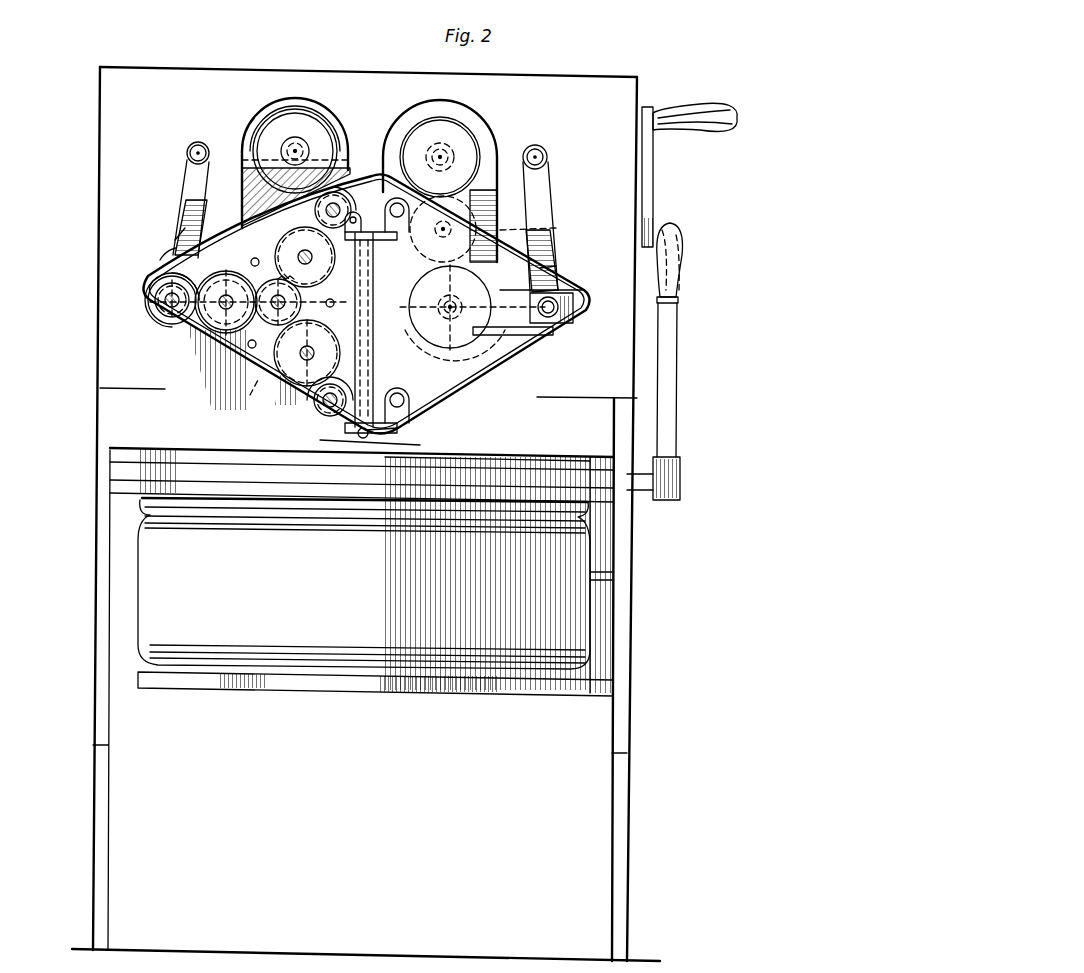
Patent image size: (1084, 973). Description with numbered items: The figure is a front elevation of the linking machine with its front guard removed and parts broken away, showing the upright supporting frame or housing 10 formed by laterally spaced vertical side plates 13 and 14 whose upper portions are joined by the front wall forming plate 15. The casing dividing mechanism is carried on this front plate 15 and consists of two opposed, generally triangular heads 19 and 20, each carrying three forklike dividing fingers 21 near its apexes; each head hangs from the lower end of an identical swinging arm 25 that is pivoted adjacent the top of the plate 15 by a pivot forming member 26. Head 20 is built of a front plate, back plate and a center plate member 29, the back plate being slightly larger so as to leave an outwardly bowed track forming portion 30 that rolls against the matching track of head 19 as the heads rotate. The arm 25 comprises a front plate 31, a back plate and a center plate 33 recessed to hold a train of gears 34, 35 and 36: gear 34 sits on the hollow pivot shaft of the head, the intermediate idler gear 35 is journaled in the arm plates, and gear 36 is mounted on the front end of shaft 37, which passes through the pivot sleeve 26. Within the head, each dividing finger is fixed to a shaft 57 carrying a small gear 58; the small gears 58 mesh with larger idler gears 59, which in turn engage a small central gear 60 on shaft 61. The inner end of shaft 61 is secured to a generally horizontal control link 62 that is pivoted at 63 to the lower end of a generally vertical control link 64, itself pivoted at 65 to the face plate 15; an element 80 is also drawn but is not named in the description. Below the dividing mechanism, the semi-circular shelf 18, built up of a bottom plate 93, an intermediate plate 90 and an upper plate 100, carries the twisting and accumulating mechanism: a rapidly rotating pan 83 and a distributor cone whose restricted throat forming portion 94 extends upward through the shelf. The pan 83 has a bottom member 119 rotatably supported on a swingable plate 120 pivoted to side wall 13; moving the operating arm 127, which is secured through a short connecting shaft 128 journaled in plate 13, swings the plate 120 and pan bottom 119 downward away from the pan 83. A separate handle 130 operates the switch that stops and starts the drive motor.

The supporting frame or housing 10 is at (312, 95).
The side wall or plate member 13 is at (622, 647).
The side wall or plate member 14 is at (100, 562).
The front wall forming plate 15 is at (602, 216).
The semi-circular shelf 18 is at (138, 452).
The triangular head 19 is at (545, 352).
The triangular head 20 is at (178, 350).
The dividing fingers 21 is at (510, 338).
The swinging arm 25 is at (257, 108).
The pivot forming member 26 is at (303, 146).
The center plate member 29 is at (318, 96).
The track forming portion 30 is at (466, 398).
The front plate 31 is at (252, 180).
The center plate 33 is at (268, 108).
The gear 34 is at (250, 402).
The intermediate idler gear 35 is at (248, 240).
The gear 36 is at (262, 138).
The shaft 37 is at (296, 138).
The shaft 57 is at (165, 307).
The small gears 58 is at (160, 299).
The idler gears 59 is at (172, 322).
The central gear 60 is at (240, 357).
The shaft 61 is at (366, 325).
The control link 62 is at (176, 222).
The pivot 63 is at (160, 285).
The control link 64 is at (190, 176).
The pivot 65 is at (194, 152).
The idler gear 80 is at (385, 262).
The pan or receptacle 83 is at (375, 616).
The intermediate plate 90 is at (243, 490).
The bottom plate 93 is at (322, 490).
The throat forming portion 94 is at (402, 447).
The upper plate 100 is at (200, 460).
The bottom member 119 is at (282, 665).
The swingable plate 120 is at (386, 695).
The operating arm 127 is at (670, 390).
The connecting shaft 128 is at (666, 562).
The handle 130 is at (650, 188).